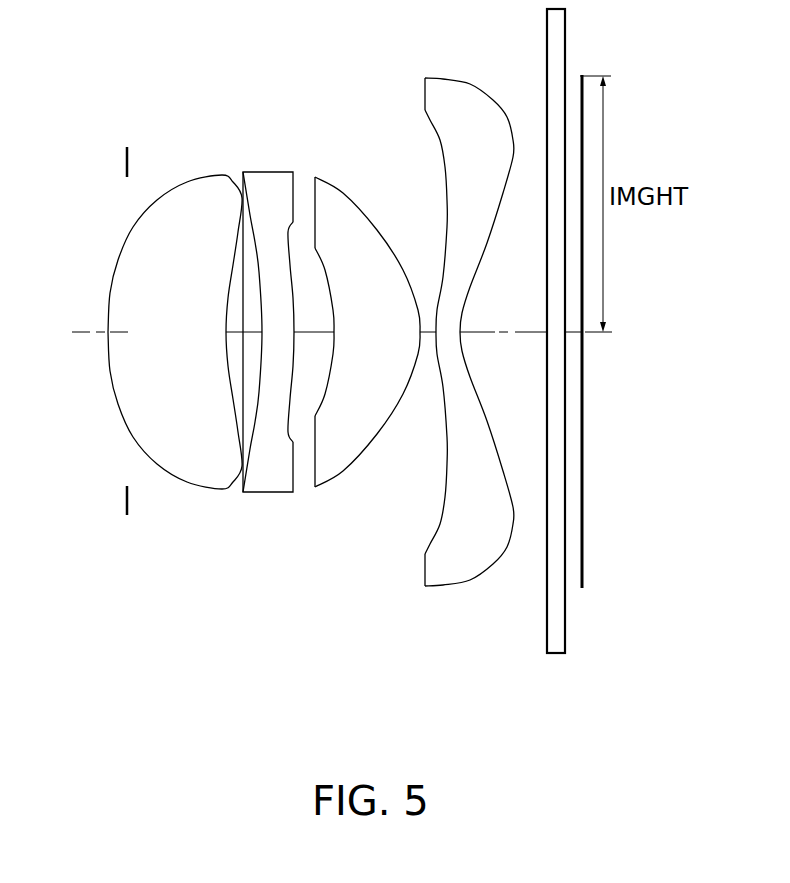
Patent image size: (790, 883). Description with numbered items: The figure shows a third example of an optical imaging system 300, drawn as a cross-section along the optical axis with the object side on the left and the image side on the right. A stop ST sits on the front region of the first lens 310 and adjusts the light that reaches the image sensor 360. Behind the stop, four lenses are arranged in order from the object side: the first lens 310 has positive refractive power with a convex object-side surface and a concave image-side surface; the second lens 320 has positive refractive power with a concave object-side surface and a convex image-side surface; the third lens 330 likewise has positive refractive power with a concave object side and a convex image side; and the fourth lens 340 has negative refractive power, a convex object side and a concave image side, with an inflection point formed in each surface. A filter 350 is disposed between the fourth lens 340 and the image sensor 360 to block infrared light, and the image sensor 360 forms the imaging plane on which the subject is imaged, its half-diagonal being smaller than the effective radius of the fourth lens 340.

The optical imaging system 300 is at (106, 80).
The stop ST is at (125, 507).
The first lens 310 is at (193, 478).
The second lens 320 is at (257, 492).
The third lens 330 is at (343, 468).
The fourth lens 340 is at (433, 585).
The filter 350 is at (547, 625).
The image sensor 360 is at (583, 578).